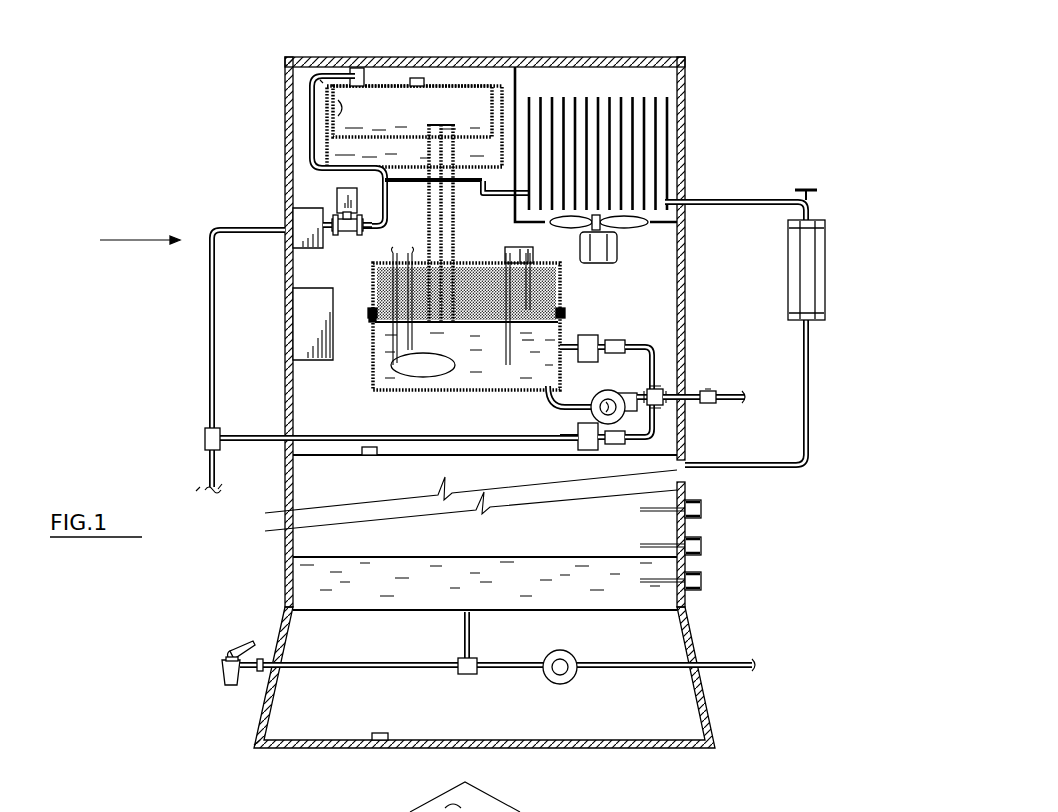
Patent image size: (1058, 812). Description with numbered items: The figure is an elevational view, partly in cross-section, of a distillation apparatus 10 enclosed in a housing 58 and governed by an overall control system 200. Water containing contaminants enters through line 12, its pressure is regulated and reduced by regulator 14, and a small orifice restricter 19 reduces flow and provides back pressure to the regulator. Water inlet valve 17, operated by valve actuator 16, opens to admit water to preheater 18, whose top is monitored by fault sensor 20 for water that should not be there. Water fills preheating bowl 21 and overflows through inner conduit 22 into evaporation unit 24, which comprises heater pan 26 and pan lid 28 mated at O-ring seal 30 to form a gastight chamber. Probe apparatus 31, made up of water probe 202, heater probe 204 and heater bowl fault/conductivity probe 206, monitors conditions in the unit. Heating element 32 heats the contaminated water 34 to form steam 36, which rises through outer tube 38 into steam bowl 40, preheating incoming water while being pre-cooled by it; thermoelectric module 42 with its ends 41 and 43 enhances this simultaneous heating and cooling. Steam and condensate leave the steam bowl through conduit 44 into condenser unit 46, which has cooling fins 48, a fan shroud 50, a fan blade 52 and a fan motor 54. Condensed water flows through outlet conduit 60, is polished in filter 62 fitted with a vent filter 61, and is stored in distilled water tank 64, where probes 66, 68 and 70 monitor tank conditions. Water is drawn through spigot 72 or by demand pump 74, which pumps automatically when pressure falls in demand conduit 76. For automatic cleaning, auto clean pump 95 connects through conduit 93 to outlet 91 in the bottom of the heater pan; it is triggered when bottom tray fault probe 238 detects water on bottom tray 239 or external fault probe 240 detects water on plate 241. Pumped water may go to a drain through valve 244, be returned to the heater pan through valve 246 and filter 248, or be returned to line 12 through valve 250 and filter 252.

The distillation apparatus 10 is at (113, 241).
The line 12 is at (208, 300).
The regulator 14 is at (312, 222).
The valve actuator 16 is at (345, 200).
The water inlet valve 17 is at (366, 230).
The preheater 18 is at (338, 112).
The small orifice restricter 19 is at (357, 70).
The fault sensor 20 is at (418, 78).
The preheating bowl 21 is at (320, 82).
The inner conduit 22 is at (430, 190).
The evaporation unit 24 is at (399, 342).
The heater pan 26 is at (373, 358).
The pan lid 28 is at (370, 308).
The O-ring seal 30 is at (369, 318).
The probe apparatus 31 is at (533, 262).
The heating element 32 is at (400, 375).
The water 34 is at (525, 380).
The steam 36 is at (447, 280).
The outer tube 38 is at (456, 186).
The steam bowl 40 is at (495, 100).
The end of thermoelectric module 41 is at (333, 160).
The thermoelectric module 42 is at (412, 172).
The end of thermoelectric module 43 is at (484, 178).
The conduit 44 is at (490, 196).
The condenser unit 46 is at (642, 117).
The cooling fins 48 is at (650, 135).
The fan shroud 50 is at (520, 95).
The fan blade 52 is at (640, 228).
The fan motor 54 is at (617, 255).
The housing 58 is at (288, 88).
The outlet conduit 60 is at (735, 200).
The 0.2 micron filter 61 is at (812, 190).
The filter 62 is at (820, 300).
The distilled water tank 64 is at (290, 540).
The probe 66 is at (705, 580).
The probe 68 is at (700, 546).
The probe 70 is at (705, 510).
The spigot 72 is at (228, 662).
The demand pump 74 is at (578, 683).
The demand conduit 76 is at (710, 672).
The outlet 91 is at (570, 396).
The conduit 93 is at (575, 410).
The auto clean pump 95 is at (663, 390).
The control system 200 is at (310, 325).
The water probe 202 is at (548, 320).
The heater probe 204 is at (505, 370).
The heater bowl fault/conductivity probe 206 is at (530, 290).
The bottom tray fault probe 238 is at (367, 455).
The bottom tray 239 is at (327, 455).
The external fault probe 240 is at (378, 742).
The plate 241 is at (345, 735).
The valve 244 is at (718, 393).
The valve 246 is at (625, 345).
The filter 248 is at (598, 338).
The valve 250 is at (640, 437).
The filter 252 is at (585, 450).